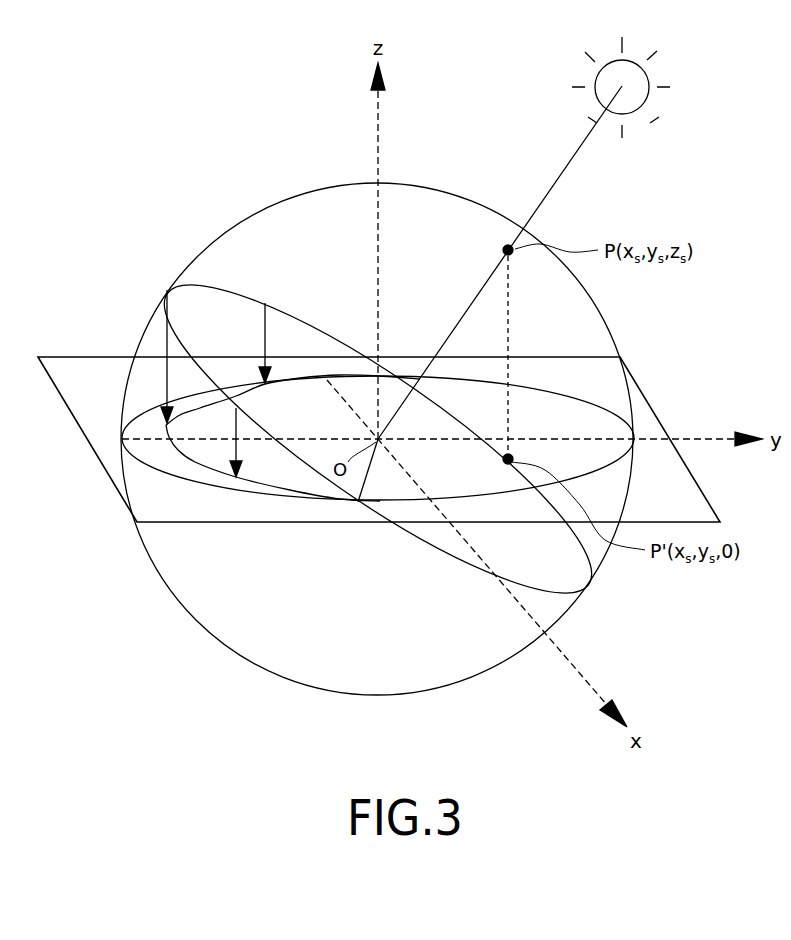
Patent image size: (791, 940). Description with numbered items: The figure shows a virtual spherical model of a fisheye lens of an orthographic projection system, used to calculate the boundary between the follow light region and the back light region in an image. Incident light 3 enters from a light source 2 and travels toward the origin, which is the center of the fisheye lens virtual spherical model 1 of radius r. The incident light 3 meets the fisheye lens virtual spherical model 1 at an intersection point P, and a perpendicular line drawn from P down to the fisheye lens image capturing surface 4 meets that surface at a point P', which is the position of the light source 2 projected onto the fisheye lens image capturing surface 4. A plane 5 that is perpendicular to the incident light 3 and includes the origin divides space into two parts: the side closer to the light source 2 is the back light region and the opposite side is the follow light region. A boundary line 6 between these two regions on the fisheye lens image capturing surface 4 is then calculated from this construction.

The fisheye lens virtual spherical model 1 is at (226, 233).
The light source 2 is at (648, 76).
The incident light 3 is at (543, 205).
The fisheye lens image capturing surface 4 is at (260, 497).
The plane 5 is at (432, 548).
The boundary line 6 is at (195, 465).